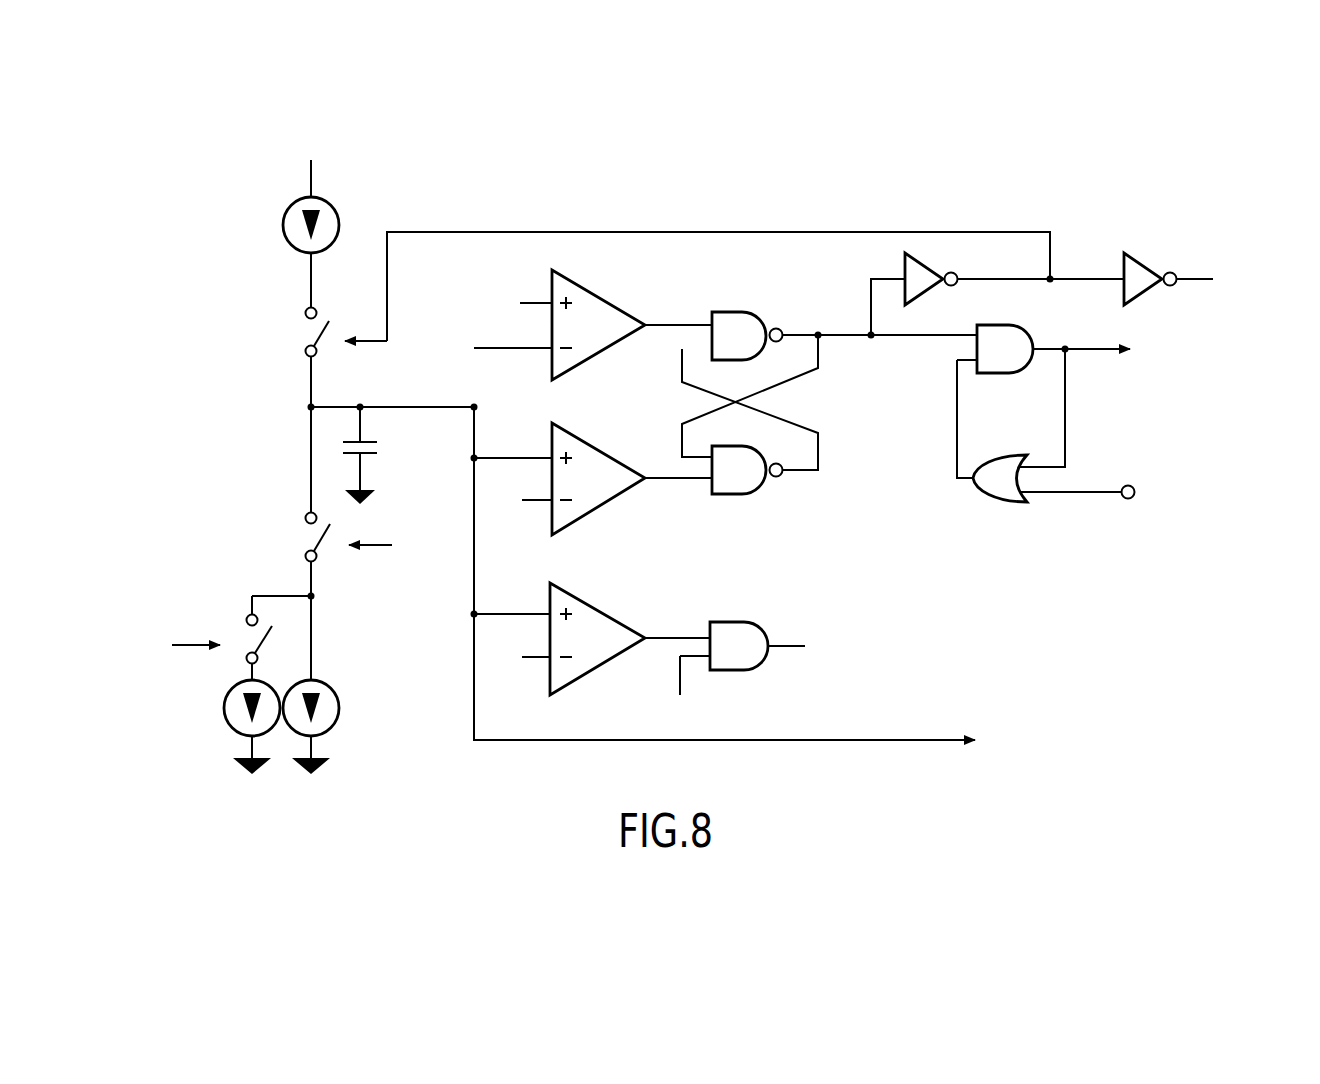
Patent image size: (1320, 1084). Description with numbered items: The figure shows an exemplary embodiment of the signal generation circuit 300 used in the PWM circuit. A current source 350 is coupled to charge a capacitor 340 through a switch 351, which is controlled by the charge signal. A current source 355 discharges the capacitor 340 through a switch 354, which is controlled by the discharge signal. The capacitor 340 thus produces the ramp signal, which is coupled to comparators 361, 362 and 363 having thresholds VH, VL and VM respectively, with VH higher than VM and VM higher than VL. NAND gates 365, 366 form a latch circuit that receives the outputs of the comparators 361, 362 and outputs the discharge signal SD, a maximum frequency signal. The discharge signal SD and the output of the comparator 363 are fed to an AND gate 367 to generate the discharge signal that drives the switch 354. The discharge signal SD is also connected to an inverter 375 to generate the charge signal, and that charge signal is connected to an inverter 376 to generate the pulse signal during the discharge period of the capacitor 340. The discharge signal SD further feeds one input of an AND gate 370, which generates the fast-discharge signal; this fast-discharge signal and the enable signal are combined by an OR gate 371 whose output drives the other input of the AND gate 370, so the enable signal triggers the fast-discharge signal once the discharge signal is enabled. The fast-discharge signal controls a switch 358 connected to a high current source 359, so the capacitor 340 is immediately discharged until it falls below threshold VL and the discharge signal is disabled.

The signal generation circuit 300 is at (1190, 163).
The current source 350 is at (283, 225).
The switch 351 is at (302, 324).
The capacitor 340 is at (382, 447).
The switch 354 is at (300, 524).
The switch 358 is at (224, 631).
The current source 359 is at (218, 727).
The current source 355 is at (341, 727).
The comparator 361 is at (642, 280).
The comparator 362 is at (590, 432).
The comparator 363 is at (588, 598).
The NAND gate 365 is at (732, 308).
The NAND gate 366 is at (737, 495).
The AND gate 367 is at (737, 672).
The AND gate 370 is at (1028, 333).
The OR gate 371 is at (1013, 500).
The inverter 375 is at (948, 270).
The inverter 376 is at (1164, 265).